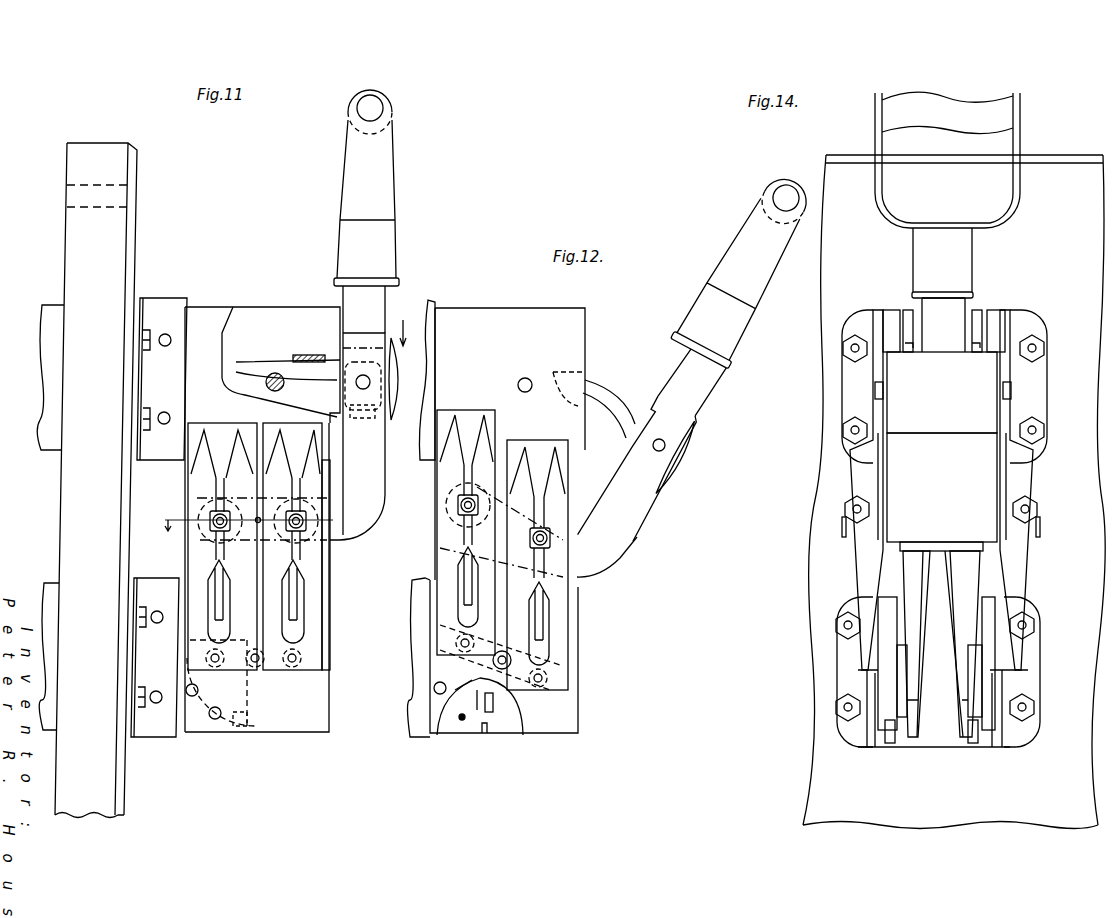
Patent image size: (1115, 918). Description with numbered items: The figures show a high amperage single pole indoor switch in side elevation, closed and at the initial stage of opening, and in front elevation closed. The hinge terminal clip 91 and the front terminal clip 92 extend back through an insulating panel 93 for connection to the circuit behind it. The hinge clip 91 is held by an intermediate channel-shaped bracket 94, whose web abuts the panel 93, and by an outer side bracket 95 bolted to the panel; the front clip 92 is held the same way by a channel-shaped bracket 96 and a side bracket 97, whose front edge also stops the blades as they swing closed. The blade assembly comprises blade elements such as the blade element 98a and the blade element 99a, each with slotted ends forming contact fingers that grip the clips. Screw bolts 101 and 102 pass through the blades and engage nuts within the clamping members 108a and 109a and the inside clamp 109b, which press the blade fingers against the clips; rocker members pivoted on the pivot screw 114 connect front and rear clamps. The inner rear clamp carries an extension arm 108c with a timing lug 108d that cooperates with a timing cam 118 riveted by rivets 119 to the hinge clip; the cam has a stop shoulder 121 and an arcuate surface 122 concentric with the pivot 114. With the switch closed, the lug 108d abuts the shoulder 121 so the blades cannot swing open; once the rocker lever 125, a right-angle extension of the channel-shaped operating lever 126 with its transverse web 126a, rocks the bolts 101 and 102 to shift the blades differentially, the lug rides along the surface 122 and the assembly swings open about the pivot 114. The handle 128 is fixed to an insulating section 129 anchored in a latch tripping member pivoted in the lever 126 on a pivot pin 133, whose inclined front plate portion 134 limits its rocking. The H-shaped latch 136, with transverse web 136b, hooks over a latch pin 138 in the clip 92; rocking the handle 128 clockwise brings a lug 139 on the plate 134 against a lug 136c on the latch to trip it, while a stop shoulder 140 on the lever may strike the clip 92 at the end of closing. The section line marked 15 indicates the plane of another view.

In FIG. 11, the insulating panel 93 is at (68, 236).
In FIG. 11, the side bracket 97 is at (160, 298).
In FIG. 14, the side bracket 97 is at (878, 327).
In FIG. 11, the side bracket 95 is at (170, 737).
In FIG. 14, the side bracket 95 is at (852, 738).
In FIG. 11, the front terminal clip 92 is at (210, 307).
In FIG. 12, the front terminal clip 92 is at (502, 440).
In FIG. 14, the front terminal clip 92 is at (888, 318).
In FIG. 11, the hinge terminal clip 91 is at (326, 718).
In FIG. 12, the hinge terminal clip 91 is at (580, 730).
In FIG. 14, the hinge terminal clip 91 is at (880, 752).
In FIG. 11, the latch 136 is at (257, 360).
In FIG. 11, the transverse web portion 136b is at (310, 355).
In FIG. 11, the lug 136c is at (360, 414).
In FIG. 11, the latch pin 138 is at (270, 392).
In FIG. 12, the latch pin 138 is at (525, 378).
In FIG. 11, the blade element 98a is at (215, 423).
In FIG. 11, the blade element 99a is at (293, 423).
In FIG. 11, the clamping member 108a is at (203, 470).
In FIG. 11, the extension arm 108c is at (250, 698).
In FIG. 12, the extension arm 108c is at (495, 702).
In FIG. 14, the extension arm 108c is at (916, 703).
In FIG. 11, the timing lug 108d is at (250, 728).
In FIG. 12, the timing lug 108d is at (500, 720).
In FIG. 14, the timing lug 108d is at (897, 752).
In FIG. 11, the clamping member 109a is at (315, 466).
In FIG. 14, the clamping member 109a is at (852, 563).
In FIG. 14, the clamping member 109b is at (958, 556).
In FIG. 11, the screw bolt 101 is at (210, 518).
In FIG. 12, the screw bolt 101 is at (458, 505).
In FIG. 11, the screw bolt 102 is at (306, 525).
In FIG. 12, the screw bolt 102 is at (552, 528).
In FIG. 11, the section line 15 is at (284, 426).
In FIG. 11, the rocker lever 125 is at (252, 535).
In FIG. 12, the rocker lever 125 is at (465, 520).
In FIG. 11, the pivot screw 114 is at (262, 536).
In FIG. 12, the pivot screw 114 is at (494, 655).
In FIG. 11, the handle 128 is at (386, 98).
In FIG. 12, the handle 128 is at (765, 190).
In FIG. 14, the handle 128 is at (944, 97).
In FIG. 14, the insulating section 129 is at (945, 330).
In FIG. 11, the operating lever 126 is at (380, 452).
In FIG. 12, the operating lever 126 is at (637, 513).
In FIG. 14, the operating lever 126 is at (886, 470).
In FIG. 14, the transverse web 126a is at (975, 478).
In FIG. 11, the lug 139 is at (395, 421).
In FIG. 12, the stop shoulder 140 is at (634, 437).
In FIG. 12, the pivot pin 133 is at (666, 445).
In FIG. 12, the front plate portion 134 is at (683, 482).
In FIG. 14, the front plate portion 134 is at (980, 410).
In FIG. 12, the rivet 119 is at (434, 688).
In FIG. 12, the arcuate surface 122 is at (468, 698).
In FIG. 12, the timing cam 118 is at (446, 733).
In FIG. 14, the timing cam 118 is at (896, 695).
In FIG. 12, the stop shoulder 121 is at (482, 734).
In FIG. 14, the channel-shaped bracket 96 is at (916, 310).
In FIG. 14, the channel-shaped bracket 94 is at (940, 750).